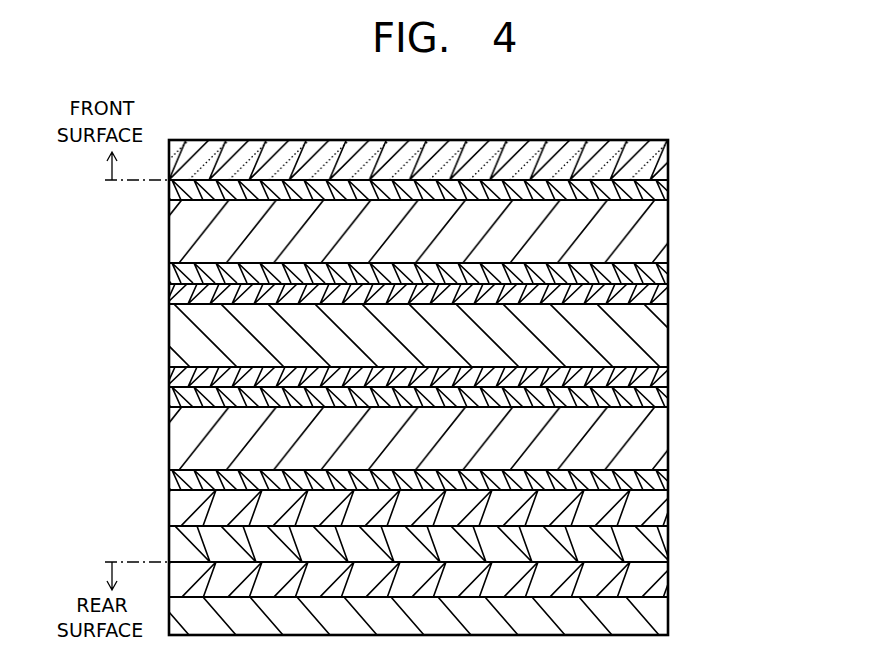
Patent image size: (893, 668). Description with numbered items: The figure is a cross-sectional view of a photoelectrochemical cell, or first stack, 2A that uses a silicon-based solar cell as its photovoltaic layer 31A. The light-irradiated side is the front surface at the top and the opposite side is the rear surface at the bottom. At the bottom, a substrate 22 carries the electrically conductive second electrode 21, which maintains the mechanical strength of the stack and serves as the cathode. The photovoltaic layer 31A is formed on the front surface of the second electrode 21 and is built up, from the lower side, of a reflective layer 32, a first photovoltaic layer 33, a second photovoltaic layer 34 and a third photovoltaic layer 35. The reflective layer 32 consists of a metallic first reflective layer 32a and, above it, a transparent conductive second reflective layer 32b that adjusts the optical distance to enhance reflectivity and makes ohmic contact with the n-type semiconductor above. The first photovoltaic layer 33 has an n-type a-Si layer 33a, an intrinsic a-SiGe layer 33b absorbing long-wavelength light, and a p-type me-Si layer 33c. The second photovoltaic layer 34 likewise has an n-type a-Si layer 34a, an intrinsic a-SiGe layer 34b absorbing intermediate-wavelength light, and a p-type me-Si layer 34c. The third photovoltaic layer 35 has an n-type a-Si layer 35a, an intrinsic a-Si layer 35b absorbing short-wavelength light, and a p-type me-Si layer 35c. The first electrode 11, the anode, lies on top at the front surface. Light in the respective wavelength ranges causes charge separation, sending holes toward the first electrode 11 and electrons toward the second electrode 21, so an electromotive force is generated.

The photoelectrochemical cell (first stack) 2A is at (511, 354).
The first electrode 11 is at (641, 160).
The photovoltaic layer 31A is at (511, 371).
The third photovoltaic layer 35 is at (474, 232).
The p-type me-Si layer 35c is at (641, 192).
The intrinsic a-Si layer 35b is at (641, 229).
The n-type a-Si layer 35a is at (452, 272).
The second photovoltaic layer 34 is at (474, 335).
The p-type me-Si layer 34c is at (641, 295).
The intrinsic a-SiGe layer 34b is at (641, 332).
The n-type a-Si layer 34a is at (452, 375).
The first photovoltaic layer 33 is at (474, 438).
The p-type me-Si layer 33c is at (641, 395).
The intrinsic a-SiGe layer 33b is at (641, 435).
The n-type a-Si layer 33a is at (452, 478).
The reflective layer 32 is at (474, 526).
The second reflective layer 32b is at (641, 502).
The first reflective layer 32a is at (641, 542).
The second electrode 21 is at (641, 579).
The substrate 22 is at (641, 614).